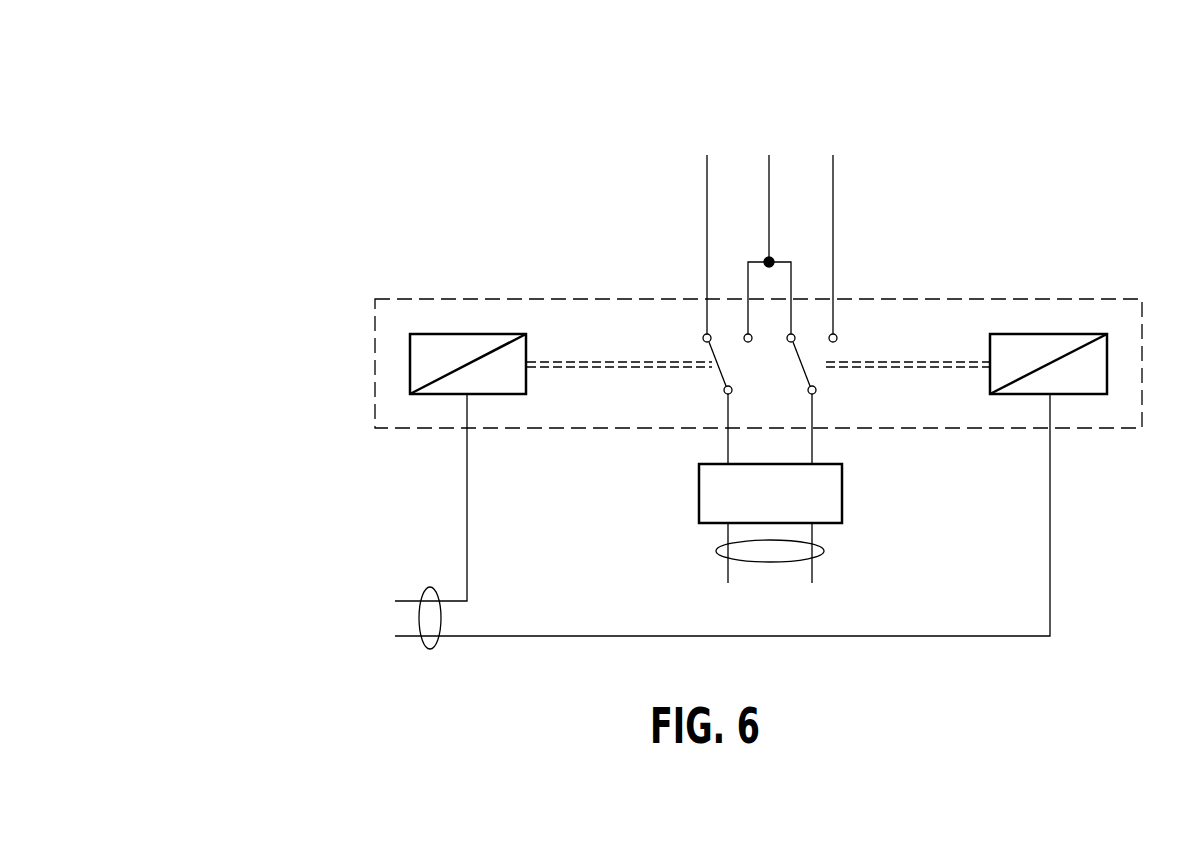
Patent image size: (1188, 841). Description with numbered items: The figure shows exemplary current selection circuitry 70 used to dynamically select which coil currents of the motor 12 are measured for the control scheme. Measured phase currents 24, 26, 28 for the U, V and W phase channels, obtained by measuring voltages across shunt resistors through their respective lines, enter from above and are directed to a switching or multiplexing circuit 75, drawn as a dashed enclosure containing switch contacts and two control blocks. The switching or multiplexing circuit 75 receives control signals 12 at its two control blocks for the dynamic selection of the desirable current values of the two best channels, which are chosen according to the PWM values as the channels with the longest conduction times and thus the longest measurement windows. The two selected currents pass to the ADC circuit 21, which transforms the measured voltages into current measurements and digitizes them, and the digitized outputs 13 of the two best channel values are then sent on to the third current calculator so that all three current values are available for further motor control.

The current selection circuitry 70 is at (1051, 184).
The measured phase current for U phase 24 is at (707, 227).
The measured phase current for V phase 26 is at (770, 227).
The measured phase current for W phase 28 is at (833, 227).
The switching or multiplexing circuit 75 is at (1122, 299).
The ADC circuit 21 is at (842, 485).
The signals to 3rd current calculator 13 is at (824, 551).
The motor 12 is at (430, 649).